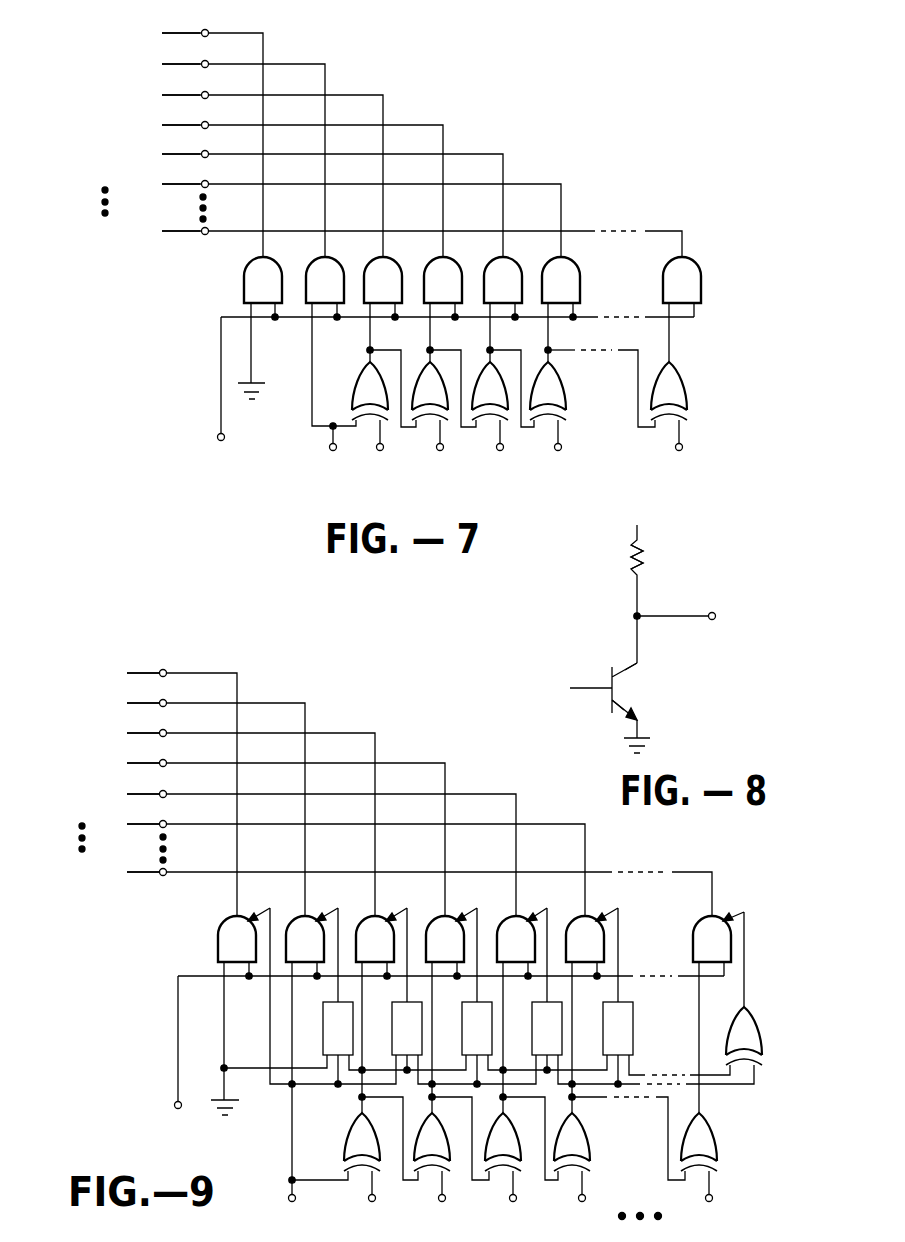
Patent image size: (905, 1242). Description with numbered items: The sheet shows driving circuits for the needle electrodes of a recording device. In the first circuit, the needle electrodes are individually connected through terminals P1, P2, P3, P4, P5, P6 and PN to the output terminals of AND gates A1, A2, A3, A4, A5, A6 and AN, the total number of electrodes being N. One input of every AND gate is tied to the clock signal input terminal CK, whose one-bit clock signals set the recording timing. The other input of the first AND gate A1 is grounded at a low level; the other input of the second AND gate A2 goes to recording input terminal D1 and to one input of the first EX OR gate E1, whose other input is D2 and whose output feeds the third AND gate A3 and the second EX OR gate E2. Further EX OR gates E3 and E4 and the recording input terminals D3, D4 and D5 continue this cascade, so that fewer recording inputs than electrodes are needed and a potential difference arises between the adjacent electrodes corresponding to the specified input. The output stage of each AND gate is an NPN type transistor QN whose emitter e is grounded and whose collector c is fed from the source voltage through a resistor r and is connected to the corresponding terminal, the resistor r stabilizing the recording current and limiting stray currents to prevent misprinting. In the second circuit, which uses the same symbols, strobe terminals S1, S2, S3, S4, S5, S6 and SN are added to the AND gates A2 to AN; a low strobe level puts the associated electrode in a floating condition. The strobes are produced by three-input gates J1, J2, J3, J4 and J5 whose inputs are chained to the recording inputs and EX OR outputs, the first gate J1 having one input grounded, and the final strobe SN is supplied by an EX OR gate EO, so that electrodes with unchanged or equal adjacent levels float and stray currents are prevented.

In FIG. 7, the terminal P1 is at (208, 30).
In FIG. 8, the terminal P1 is at (716, 617).
In FIG. 9, the terminal P1 is at (166, 670).
In FIG. 7, the terminal P2 is at (208, 61).
In FIG. 9, the terminal P2 is at (166, 700).
In FIG. 7, the terminal P3 is at (208, 92).
In FIG. 9, the terminal P3 is at (166, 730).
In FIG. 7, the terminal P4 is at (208, 122).
In FIG. 9, the terminal P4 is at (166, 760).
In FIG. 7, the terminal P5 is at (208, 151).
In FIG. 9, the terminal P5 is at (166, 791).
In FIG. 7, the terminal P6 is at (208, 181).
In FIG. 9, the terminal P6 is at (166, 821).
In FIG. 7, the terminal PN is at (208, 228).
In FIG. 9, the terminal PN is at (166, 869).
In FIG. 7, the first AND gate A1 is at (256, 266).
In FIG. 8, the first AND gate A1 is at (665, 626).
In FIG. 9, the first AND gate A1 is at (222, 930).
In FIG. 7, the second AND gate A2 is at (318, 266).
In FIG. 9, the second AND gate A2 is at (298, 925).
In FIG. 7, the third AND gate A3 is at (376, 266).
In FIG. 9, the third AND gate A3 is at (368, 925).
In FIG. 7, the fourth AND gate A4 is at (436, 266).
In FIG. 9, the fourth AND gate A4 is at (438, 925).
In FIG. 7, the fifth AND gate A5 is at (496, 266).
In FIG. 9, the fifth AND gate A5 is at (509, 925).
In FIG. 7, the sixth AND gate A6 is at (554, 266).
In FIG. 9, the sixth AND gate A6 is at (578, 925).
In FIG. 7, the final AND gate AN is at (672, 270).
In FIG. 9, the final AND gate AN is at (700, 932).
In FIG. 7, the first EX OR gate E1 is at (364, 378).
In FIG. 9, the first EX OR gate E1 is at (364, 1133).
In FIG. 7, the second EX OR gate E2 is at (424, 378).
In FIG. 9, the second EX OR gate E2 is at (444, 1142).
In FIG. 7, the third EX OR gate E3 is at (484, 378).
In FIG. 9, the third EX OR gate E3 is at (514, 1142).
In FIG. 7, the fourth EX OR gate E4 is at (542, 378).
In FIG. 9, the fourth EX OR gate E4 is at (583, 1148).
In FIG. 9, the EX OR gate EO is at (756, 1022).
In FIG. 7, the recording input terminal D1 is at (335, 450).
In FIG. 9, the recording input terminal D1 is at (290, 1212).
In FIG. 7, the recording input terminal D2 is at (383, 447).
In FIG. 9, the recording input terminal D2 is at (374, 1199).
In FIG. 7, the recording input terminal D3 is at (443, 447).
In FIG. 9, the recording input terminal D3 is at (444, 1199).
In FIG. 7, the recording input terminal D4 is at (502, 447).
In FIG. 9, the recording input terminal D4 is at (515, 1199).
In FIG. 7, the recording input terminal D5 is at (562, 447).
In FIG. 9, the recording input terminal D5 is at (584, 1199).
In FIG. 7, the clock signal input terminal CK is at (220, 392).
In FIG. 8, the resistor r is at (648, 560).
In FIG. 8, the NPN type transistor QN is at (610, 681).
In FIG. 8, the collector c is at (633, 670).
In FIG. 8, the emitter e is at (620, 717).
In FIG. 9, the strobe terminal S1 is at (270, 907).
In FIG. 9, the strobe terminal S2 is at (338, 907).
In FIG. 9, the strobe terminal S3 is at (407, 907).
In FIG. 9, the strobe terminal S4 is at (477, 907).
In FIG. 9, the strobe terminal S5 is at (547, 907).
In FIG. 9, the strobe terminal S6 is at (618, 907).
In FIG. 9, the strobe terminal SN is at (744, 912).
In FIG. 9, the first gate J1 is at (332, 1004).
In FIG. 9, the second gate J2 is at (401, 1004).
In FIG. 9, the third gate J3 is at (471, 1004).
In FIG. 9, the fourth gate J4 is at (541, 1004).
In FIG. 9, the fifth gate J5 is at (612, 1004).